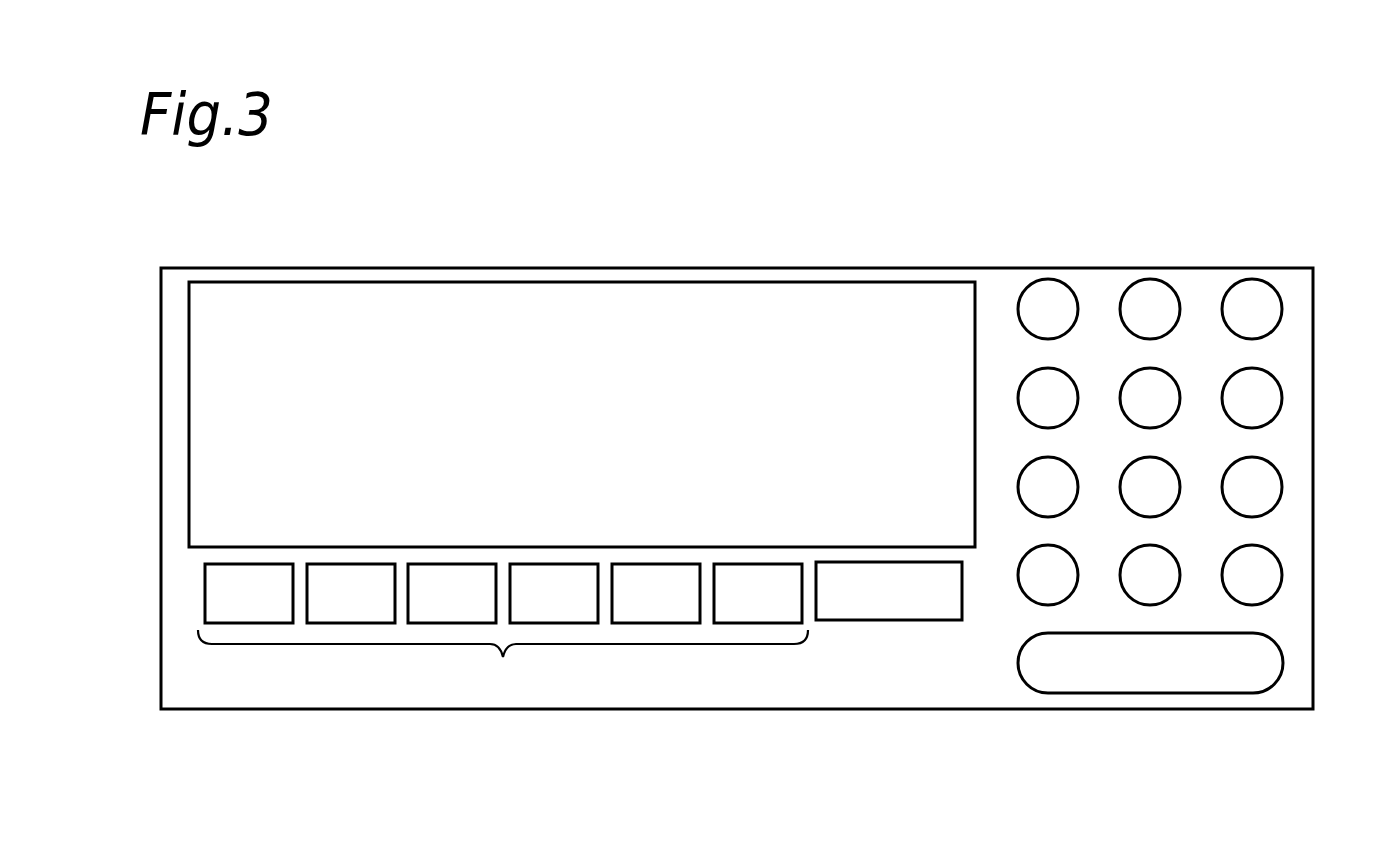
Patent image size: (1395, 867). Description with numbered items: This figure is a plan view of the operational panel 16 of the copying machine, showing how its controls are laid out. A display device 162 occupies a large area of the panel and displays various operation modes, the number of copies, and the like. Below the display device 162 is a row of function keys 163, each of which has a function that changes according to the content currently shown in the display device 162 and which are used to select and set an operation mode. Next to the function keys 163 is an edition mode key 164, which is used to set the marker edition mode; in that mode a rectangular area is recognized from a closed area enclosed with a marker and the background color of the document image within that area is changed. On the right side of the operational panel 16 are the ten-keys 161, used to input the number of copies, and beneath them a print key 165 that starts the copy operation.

The operational panel 16 is at (815, 252).
The ten-keys 161 is at (1282, 455).
The display device 162 is at (474, 283).
The function key 163 is at (495, 667).
The edition mode key 164 is at (888, 621).
The print key 165 is at (1153, 695).